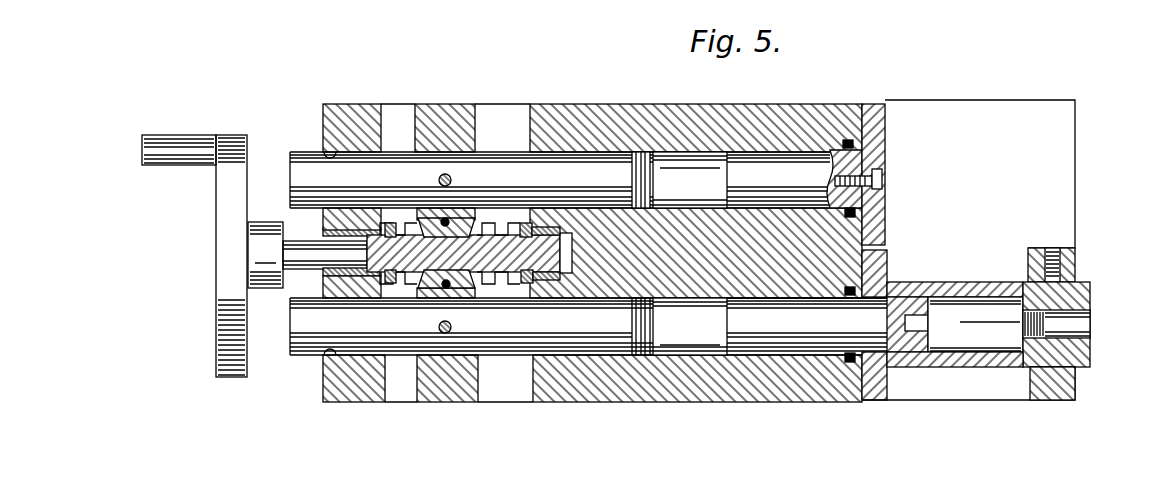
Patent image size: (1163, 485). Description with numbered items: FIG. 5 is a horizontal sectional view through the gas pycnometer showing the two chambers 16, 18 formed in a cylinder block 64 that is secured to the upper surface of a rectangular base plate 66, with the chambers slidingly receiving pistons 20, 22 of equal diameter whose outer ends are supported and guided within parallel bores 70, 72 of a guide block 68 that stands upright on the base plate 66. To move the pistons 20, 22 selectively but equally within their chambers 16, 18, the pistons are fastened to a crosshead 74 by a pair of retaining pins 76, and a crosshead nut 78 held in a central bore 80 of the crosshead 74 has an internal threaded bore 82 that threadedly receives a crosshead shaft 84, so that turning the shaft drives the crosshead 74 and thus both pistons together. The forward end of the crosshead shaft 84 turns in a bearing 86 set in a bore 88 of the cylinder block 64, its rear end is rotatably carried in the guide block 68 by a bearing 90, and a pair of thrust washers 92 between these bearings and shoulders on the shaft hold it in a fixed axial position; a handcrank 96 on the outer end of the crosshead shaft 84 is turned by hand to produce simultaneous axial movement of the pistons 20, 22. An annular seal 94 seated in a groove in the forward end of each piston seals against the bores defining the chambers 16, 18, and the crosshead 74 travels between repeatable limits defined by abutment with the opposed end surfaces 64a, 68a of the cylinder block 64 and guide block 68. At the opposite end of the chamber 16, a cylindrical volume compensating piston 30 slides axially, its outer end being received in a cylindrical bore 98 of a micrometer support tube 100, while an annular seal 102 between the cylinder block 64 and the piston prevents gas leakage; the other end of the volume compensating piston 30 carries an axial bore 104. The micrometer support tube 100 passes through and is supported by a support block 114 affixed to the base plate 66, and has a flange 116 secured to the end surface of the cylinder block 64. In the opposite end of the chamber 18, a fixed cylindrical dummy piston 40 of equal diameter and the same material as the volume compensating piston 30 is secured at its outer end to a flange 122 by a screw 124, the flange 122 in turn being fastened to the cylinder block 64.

The chamber 16 is at (697, 352).
The chamber 18 is at (686, 152).
The piston 20 is at (508, 357).
The piston 22 is at (507, 150).
The volume compensating piston 30 is at (775, 343).
The dummy piston 40 is at (778, 152).
The cylinder block 64 is at (597, 104).
The end surface 64a is at (531, 393).
The base plate 66 is at (995, 108).
The guide block 68 is at (321, 112).
The end surface 68a is at (389, 392).
The bore 70 is at (322, 358).
The bore 72 is at (325, 155).
The crosshead 74 is at (454, 104).
The retaining pins 76 is at (440, 177).
The crosshead nut 78 is at (470, 218).
The central bore 80 is at (475, 286).
The internal threaded bore 82 is at (406, 283).
The crosshead shaft 84 is at (302, 270).
The bearing 86 is at (549, 280).
The bore 88 is at (572, 247).
The bearing 90 is at (323, 229).
The thrust washers 92 is at (398, 221).
The annular seal 94 is at (648, 151).
The handcrank 96 is at (218, 217).
The cylindrical bore 98 is at (980, 350).
The micrometer support tube 100 is at (948, 367).
The annular seal 102 is at (849, 365).
The axial bore 104 is at (953, 297).
The support block 114 is at (1080, 250).
The flange 116 is at (886, 263).
The flange 122 is at (880, 118).
The screw 124 is at (883, 178).